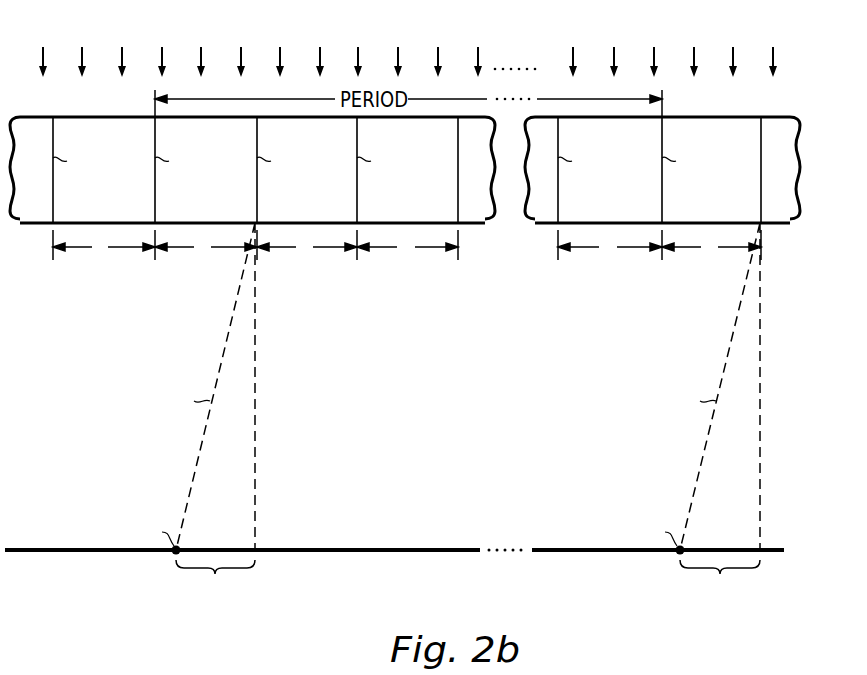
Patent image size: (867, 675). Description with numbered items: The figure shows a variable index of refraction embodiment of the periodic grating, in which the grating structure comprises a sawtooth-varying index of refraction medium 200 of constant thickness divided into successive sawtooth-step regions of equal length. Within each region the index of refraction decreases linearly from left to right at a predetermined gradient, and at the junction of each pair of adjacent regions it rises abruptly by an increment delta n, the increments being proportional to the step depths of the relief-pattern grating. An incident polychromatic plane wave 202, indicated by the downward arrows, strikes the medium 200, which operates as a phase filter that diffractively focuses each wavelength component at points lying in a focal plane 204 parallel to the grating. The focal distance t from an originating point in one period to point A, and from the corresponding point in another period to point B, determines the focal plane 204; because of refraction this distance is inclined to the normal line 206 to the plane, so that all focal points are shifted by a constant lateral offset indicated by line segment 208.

The incident polychromatic plane wave 202 is at (408, 45).
The sawtooth-varying index of refraction medium 200 is at (20, 223).
The focal plane 204 is at (360, 552).
The normal line to focal plane 206 is at (774, 498).
The line segment 208 is at (468, 585).